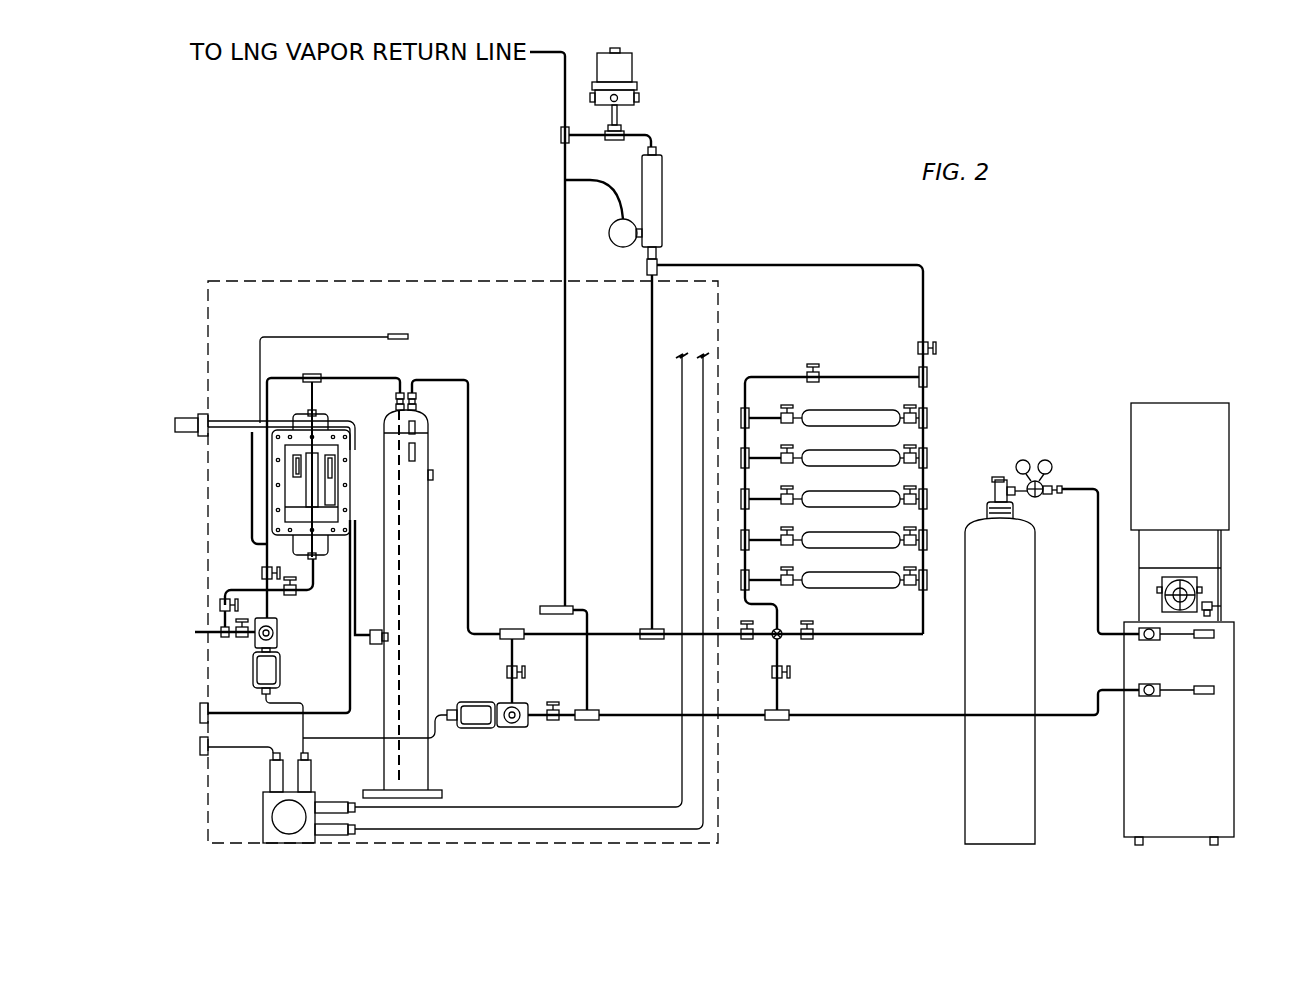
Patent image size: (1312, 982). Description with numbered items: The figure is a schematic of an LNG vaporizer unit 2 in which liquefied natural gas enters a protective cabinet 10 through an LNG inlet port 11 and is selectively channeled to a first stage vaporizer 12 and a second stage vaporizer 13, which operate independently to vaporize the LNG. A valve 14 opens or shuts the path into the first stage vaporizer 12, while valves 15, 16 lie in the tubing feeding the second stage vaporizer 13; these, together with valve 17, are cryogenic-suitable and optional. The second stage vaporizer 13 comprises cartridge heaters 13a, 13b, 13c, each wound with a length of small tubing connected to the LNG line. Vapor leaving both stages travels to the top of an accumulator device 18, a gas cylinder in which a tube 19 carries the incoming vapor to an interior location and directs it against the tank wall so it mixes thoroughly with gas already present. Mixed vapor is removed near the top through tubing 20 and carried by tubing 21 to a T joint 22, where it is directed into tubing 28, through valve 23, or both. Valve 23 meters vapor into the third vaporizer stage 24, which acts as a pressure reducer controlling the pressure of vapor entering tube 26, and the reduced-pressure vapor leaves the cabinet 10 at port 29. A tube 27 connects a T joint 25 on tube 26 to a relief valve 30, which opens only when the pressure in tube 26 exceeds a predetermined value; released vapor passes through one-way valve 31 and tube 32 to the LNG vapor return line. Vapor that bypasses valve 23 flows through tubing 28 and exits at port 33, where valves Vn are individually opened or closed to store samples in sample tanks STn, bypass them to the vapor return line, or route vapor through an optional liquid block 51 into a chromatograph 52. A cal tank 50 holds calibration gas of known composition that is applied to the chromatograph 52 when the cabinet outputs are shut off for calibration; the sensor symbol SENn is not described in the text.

The LNG vaporizer unit 2 is at (364, 225).
The cabinet 10 is at (208, 326).
The LNG inlet port 11 is at (197, 632).
The first stage vaporizer 12 is at (265, 668).
The second stage vaporizer 13 is at (278, 487).
The cartridge heater 13a is at (295, 462).
The cartridge heater 13b is at (313, 477).
The cartridge heater 13c is at (330, 490).
The valve 14 is at (243, 636).
The valve 15 is at (220, 605).
The valve 16 is at (290, 597).
The valve 17 is at (263, 572).
The accumulator device 18 is at (430, 505).
The tube 19 is at (407, 547).
The tubing 20 is at (417, 453).
The tubing 21 is at (470, 403).
The T joint 22 is at (512, 630).
The valve 23 is at (508, 672).
The vaporizer stage 3 24 is at (477, 717).
The T joint 25 is at (587, 717).
The tube 26 is at (636, 718).
The tube 27 is at (590, 663).
The tubing 28 is at (612, 632).
The port 29 is at (722, 718).
The relief valve 30 is at (565, 606).
The one-way valve 31 is at (567, 535).
The tube 32 is at (765, 449).
The port 33 is at (722, 637).
The cal tank 50 is at (975, 787).
The liquid block 51 is at (1199, 591).
The chromatograph 52 is at (1201, 467).
The sensors SENn is at (408, 336).
The sample tanks STn is at (905, 588).
The valves Vn is at (908, 594).